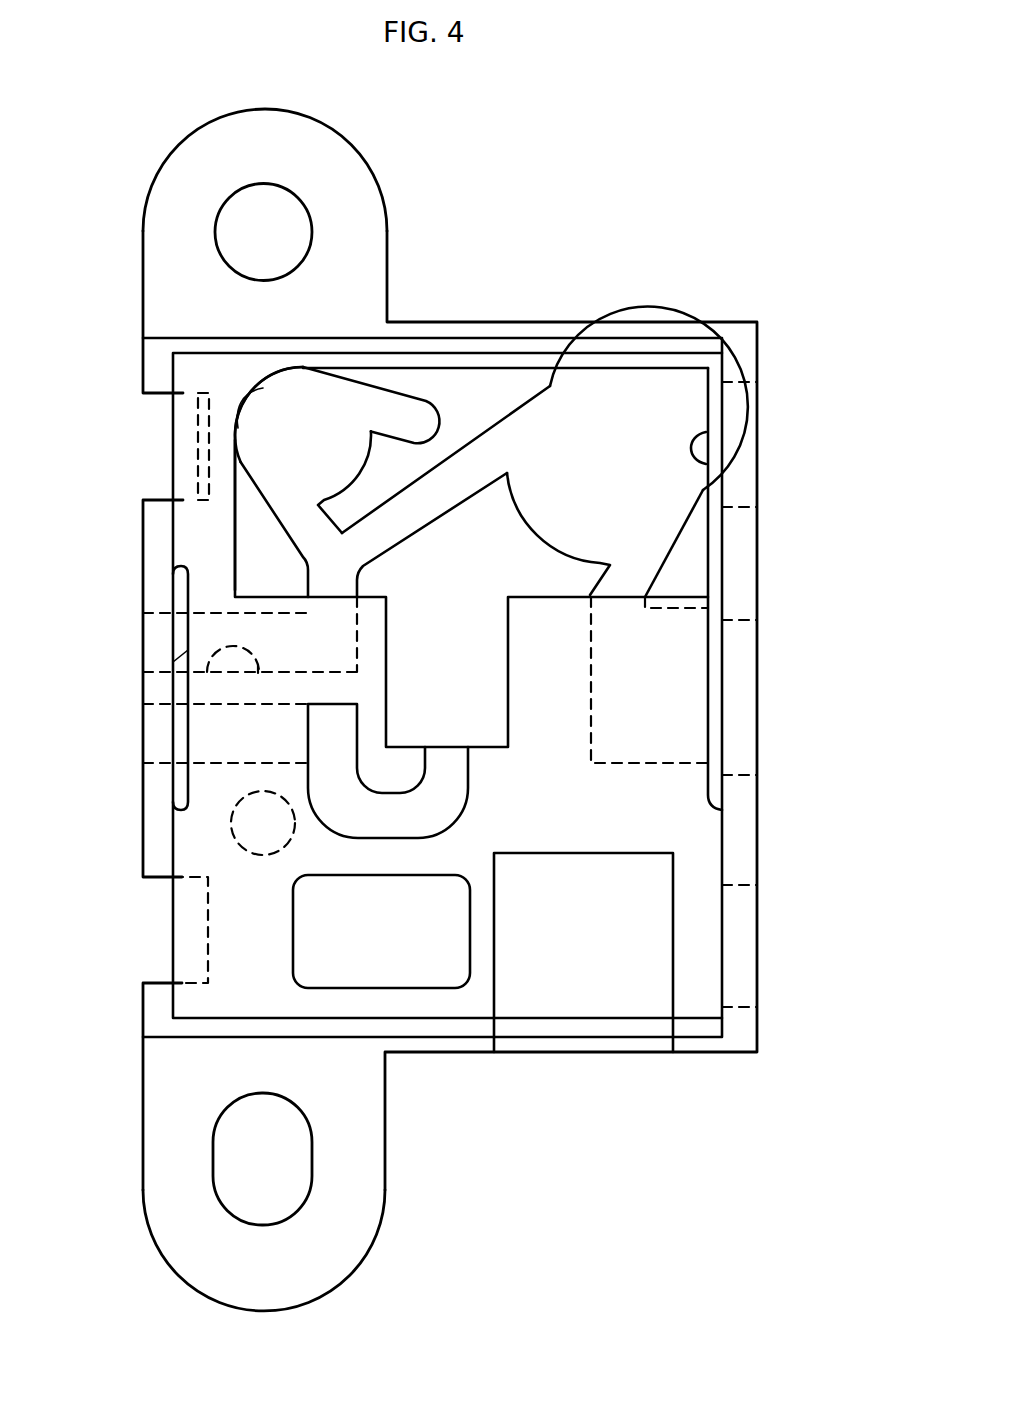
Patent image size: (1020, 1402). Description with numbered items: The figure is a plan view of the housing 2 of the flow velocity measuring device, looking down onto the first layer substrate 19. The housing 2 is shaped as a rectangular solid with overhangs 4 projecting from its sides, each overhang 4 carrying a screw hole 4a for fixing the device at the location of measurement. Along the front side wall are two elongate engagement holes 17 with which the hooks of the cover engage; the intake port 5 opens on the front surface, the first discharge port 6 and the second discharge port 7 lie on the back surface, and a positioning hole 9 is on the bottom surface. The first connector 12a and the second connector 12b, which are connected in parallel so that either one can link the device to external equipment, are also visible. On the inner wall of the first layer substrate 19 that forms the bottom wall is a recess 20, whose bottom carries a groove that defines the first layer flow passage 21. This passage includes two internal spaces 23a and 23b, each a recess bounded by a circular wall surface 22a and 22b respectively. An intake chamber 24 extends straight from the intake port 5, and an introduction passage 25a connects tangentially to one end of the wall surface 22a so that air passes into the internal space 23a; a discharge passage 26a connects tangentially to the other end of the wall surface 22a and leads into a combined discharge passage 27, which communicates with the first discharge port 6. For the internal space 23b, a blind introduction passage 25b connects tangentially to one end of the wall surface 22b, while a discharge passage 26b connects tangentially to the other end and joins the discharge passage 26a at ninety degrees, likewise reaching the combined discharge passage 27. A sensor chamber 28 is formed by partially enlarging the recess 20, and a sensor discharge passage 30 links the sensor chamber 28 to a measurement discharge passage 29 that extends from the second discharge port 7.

The housing 2 is at (118, 167).
The overhang 4 is at (143, 252).
The screw hole 4a is at (302, 197).
The intake port 5 is at (757, 680).
The first discharge port 6 is at (143, 627).
The second discharge port 7 is at (143, 715).
The positioning hole 9 is at (217, 867).
The first connector 12a is at (573, 1052).
The second connector 12b is at (410, 990).
The engagement hole 17 is at (757, 397).
The first layer substrate 19 is at (663, 827).
The recess 20 is at (232, 520).
The first layer flow passage 21 is at (572, 368).
The wall surface 22a is at (707, 465).
The wall surface 22b is at (263, 390).
The internal space 23a is at (627, 451).
The internal space 23b is at (303, 450).
The intake chamber 24 is at (662, 760).
The introduction passage 25a is at (660, 572).
The blind introduction passage 25b is at (405, 393).
The discharge passage 26a is at (468, 440).
The discharge passage 26b is at (287, 543).
The combined discharge passage 27 is at (143, 680).
The sensor chamber 28 is at (471, 557).
The measurement discharge passage 29 is at (210, 797).
The sensor discharge passage 30 is at (330, 823).